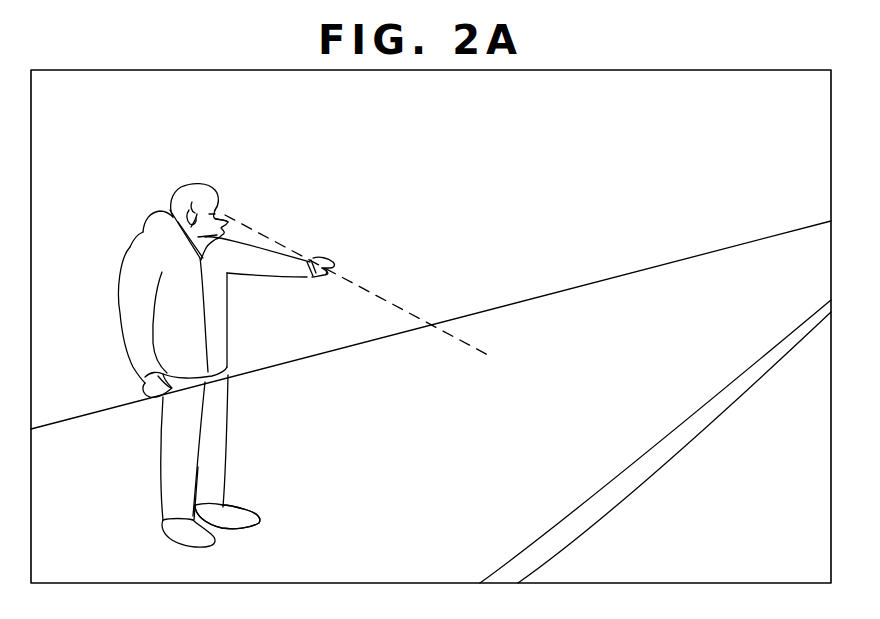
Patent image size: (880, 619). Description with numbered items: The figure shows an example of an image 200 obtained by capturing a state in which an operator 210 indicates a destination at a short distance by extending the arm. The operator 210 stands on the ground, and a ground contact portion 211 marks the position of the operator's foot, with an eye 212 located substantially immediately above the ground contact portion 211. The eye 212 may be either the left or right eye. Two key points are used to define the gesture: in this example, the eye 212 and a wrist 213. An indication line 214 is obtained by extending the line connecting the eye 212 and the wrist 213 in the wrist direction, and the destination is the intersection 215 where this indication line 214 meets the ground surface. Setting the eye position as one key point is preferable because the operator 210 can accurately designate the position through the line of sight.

The image 200 is at (96, 70).
The operator 210 is at (210, 165).
The ground contact portion 211 is at (240, 513).
The eye 212 is at (218, 213).
The wrist 213 is at (315, 256).
The indication line 214 is at (394, 307).
The intersection 215 is at (487, 356).